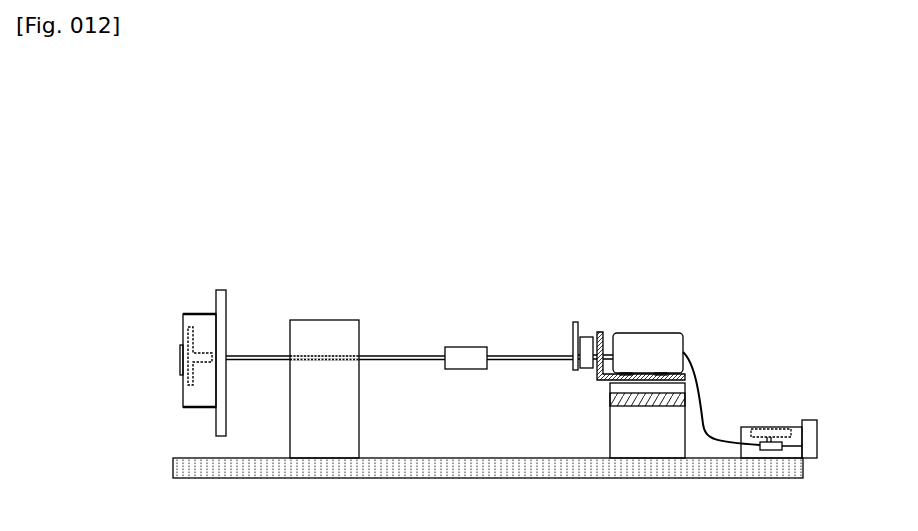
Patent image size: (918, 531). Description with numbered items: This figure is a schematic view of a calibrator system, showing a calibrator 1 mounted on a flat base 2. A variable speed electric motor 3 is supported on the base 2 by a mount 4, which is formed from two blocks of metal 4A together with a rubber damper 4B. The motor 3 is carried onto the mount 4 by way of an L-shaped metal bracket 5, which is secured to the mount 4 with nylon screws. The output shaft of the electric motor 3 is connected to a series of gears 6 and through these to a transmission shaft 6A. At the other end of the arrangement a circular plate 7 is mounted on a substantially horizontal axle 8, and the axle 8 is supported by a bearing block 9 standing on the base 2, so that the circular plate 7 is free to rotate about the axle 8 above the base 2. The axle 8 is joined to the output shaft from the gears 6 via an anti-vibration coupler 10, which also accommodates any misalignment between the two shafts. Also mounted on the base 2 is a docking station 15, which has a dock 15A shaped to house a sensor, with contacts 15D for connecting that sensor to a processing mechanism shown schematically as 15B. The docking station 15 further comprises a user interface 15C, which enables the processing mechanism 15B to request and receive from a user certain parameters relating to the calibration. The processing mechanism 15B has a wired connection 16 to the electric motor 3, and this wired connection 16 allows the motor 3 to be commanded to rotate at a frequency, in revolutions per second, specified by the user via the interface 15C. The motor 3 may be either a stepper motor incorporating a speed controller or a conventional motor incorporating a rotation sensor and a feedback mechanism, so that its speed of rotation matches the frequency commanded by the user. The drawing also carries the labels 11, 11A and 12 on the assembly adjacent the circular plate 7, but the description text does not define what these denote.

The calibrator 1 is at (384, 311).
The flat base 2 is at (378, 473).
The variable speed electric motor 3 is at (647, 333).
The mount 4 is at (604, 430).
The blocks of metal 4A is at (680, 424).
The rubber damper 4B is at (610, 400).
The L shaped metal bracket 5 is at (603, 335).
The series of gears 6 is at (587, 338).
The transmission shaft 6A is at (522, 356).
The circular plate 7 is at (225, 291).
The horizontal axle 8 is at (240, 356).
The bearing block 9 is at (325, 320).
The anti-vibration coupler 10 is at (455, 350).
The holder 11 is at (190, 313).
The recess 11A is at (189, 384).
The specimen 12 is at (181, 359).
The docking station 15 is at (742, 427).
The dock 15A is at (758, 432).
The processing mechanism 15B is at (783, 450).
The user interface 15C is at (817, 445).
The contacts 15D is at (771, 442).
The wired connection 16 is at (690, 362).